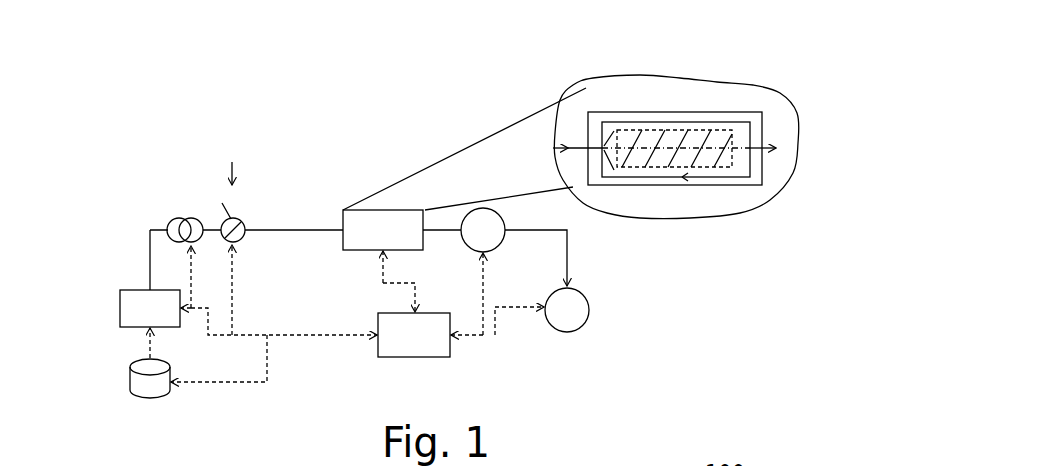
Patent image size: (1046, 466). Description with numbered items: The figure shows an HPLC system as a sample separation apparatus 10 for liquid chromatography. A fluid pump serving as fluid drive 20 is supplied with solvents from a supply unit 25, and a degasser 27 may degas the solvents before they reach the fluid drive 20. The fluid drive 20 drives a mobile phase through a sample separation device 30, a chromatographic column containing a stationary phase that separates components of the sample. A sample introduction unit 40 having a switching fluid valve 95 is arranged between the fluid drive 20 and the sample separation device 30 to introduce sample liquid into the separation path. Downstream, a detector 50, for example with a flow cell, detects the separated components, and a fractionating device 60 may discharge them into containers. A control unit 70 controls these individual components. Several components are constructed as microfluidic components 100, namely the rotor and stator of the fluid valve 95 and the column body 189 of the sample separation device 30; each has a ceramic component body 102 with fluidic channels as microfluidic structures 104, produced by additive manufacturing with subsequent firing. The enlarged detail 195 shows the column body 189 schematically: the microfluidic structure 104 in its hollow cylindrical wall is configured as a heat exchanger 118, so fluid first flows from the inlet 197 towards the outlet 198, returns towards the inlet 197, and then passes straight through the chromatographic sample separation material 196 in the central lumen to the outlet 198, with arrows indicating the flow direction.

The sample separation apparatus 10 is at (486, 356).
The fluid drive 20 is at (196, 242).
The supply unit 25 is at (150, 399).
The degasser 27 is at (131, 328).
The sample separation device 30 is at (367, 251).
The sample introduction unit 40 is at (240, 218).
The detector 50 is at (466, 247).
The fractionating device 60 is at (576, 331).
The control unit 70 is at (416, 358).
The fluid valve 95 is at (242, 239).
The microfluidic component 100 is at (224, 220).
The component body 102 is at (662, 185).
The microfluidic structure 104 is at (623, 131).
The heat exchanger 118 is at (710, 185).
The column body 189 is at (703, 113).
The detail 195 is at (579, 75).
The chromatographic sample separation material 196 is at (623, 185).
The inlet 197 is at (564, 155).
The outlet 198 is at (760, 184).